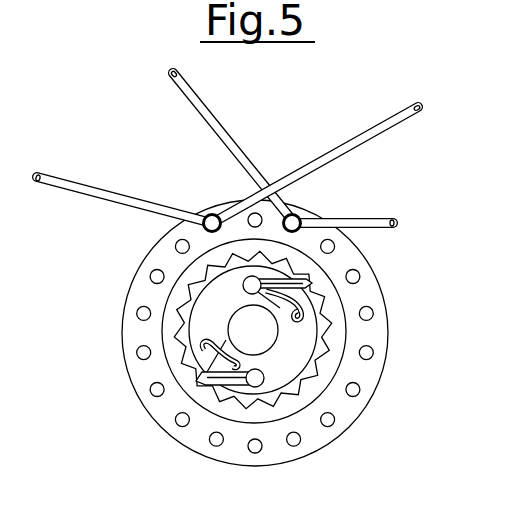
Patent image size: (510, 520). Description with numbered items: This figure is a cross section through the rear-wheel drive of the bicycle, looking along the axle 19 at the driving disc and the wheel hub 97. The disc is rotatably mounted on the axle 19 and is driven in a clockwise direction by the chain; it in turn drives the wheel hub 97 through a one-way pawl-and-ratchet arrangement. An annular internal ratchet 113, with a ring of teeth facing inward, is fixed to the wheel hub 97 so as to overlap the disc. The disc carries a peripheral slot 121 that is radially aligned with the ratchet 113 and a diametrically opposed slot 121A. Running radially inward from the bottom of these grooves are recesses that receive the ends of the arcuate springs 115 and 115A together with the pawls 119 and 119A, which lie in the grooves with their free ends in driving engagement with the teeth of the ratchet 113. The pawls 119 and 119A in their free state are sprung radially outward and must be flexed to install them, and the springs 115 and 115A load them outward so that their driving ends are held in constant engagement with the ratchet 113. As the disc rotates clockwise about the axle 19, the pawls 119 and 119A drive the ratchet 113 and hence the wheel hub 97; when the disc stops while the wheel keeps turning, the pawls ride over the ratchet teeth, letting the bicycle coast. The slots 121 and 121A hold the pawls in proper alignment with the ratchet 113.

The shaft 19 is at (263, 341).
The wheel hub 97 is at (370, 397).
The ratchet 113 is at (330, 363).
The arcuate spring 115 is at (200, 373).
The arcuate spring 115A is at (308, 288).
The pawl 119 is at (217, 382).
The pawl 119A is at (310, 280).
The peripheral slot 121 is at (227, 345).
The slot 121A is at (281, 308).